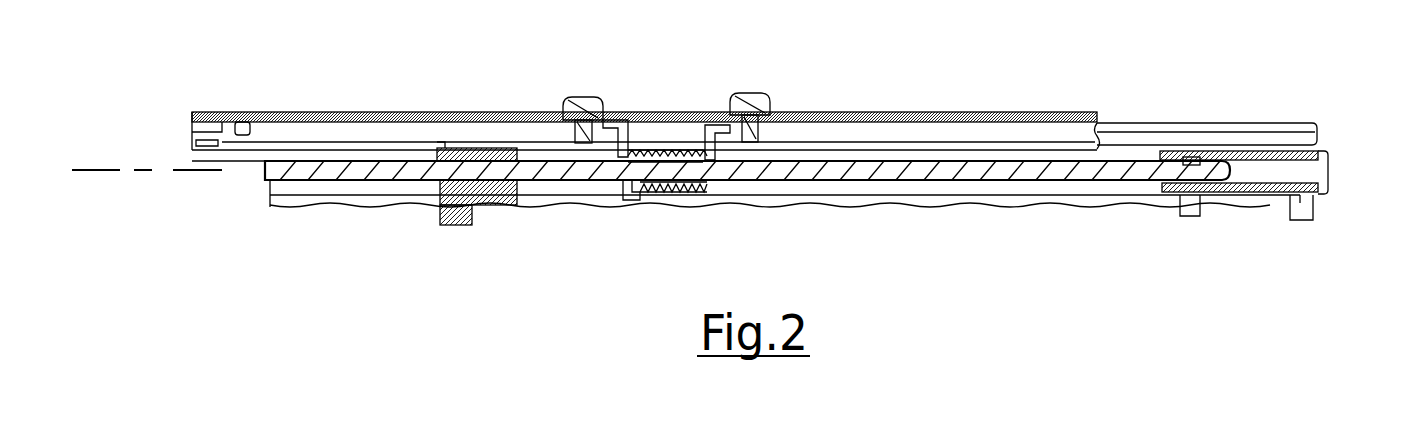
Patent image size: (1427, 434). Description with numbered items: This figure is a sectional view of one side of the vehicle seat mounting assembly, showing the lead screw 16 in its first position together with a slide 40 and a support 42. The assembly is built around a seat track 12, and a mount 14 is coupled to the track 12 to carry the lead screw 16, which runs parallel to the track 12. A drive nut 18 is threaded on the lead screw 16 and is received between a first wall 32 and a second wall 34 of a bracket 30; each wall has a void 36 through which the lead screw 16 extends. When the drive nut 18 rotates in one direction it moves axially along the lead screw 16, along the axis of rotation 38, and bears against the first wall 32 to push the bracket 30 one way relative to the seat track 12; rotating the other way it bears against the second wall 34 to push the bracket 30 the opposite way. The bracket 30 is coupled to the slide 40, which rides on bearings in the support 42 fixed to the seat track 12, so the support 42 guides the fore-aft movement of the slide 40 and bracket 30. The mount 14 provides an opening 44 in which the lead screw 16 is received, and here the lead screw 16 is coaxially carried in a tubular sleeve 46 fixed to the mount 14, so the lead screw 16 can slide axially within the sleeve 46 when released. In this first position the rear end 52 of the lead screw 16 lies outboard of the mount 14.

The seat track 12 is at (1148, 210).
The mount 14 is at (500, 193).
The lead screw 16 is at (1120, 164).
The drive nut 18 is at (704, 150).
The bracket 30 is at (606, 124).
The first wall 32 is at (707, 142).
The second wall 34 is at (629, 134).
The void 36 is at (600, 200).
The axis of rotation 38 is at (115, 170).
The slide 40 is at (967, 112).
The support 42 is at (1203, 127).
The opening 44 is at (450, 180).
The tubular sleeve 46 is at (1319, 160).
The rear end 52 is at (262, 169).